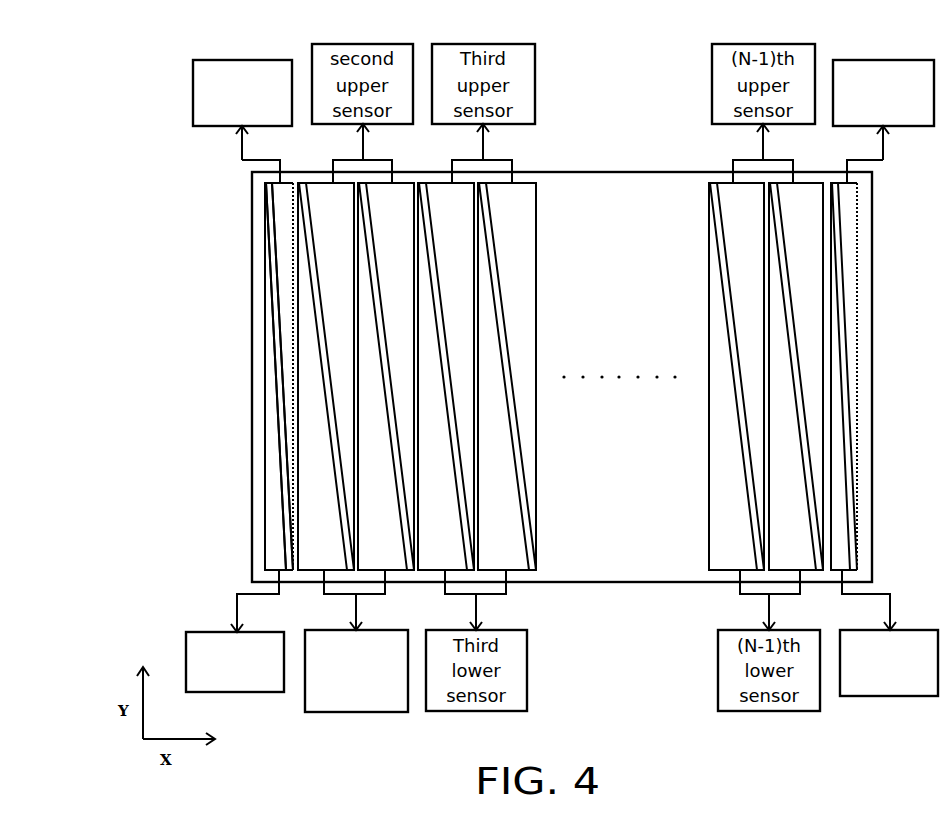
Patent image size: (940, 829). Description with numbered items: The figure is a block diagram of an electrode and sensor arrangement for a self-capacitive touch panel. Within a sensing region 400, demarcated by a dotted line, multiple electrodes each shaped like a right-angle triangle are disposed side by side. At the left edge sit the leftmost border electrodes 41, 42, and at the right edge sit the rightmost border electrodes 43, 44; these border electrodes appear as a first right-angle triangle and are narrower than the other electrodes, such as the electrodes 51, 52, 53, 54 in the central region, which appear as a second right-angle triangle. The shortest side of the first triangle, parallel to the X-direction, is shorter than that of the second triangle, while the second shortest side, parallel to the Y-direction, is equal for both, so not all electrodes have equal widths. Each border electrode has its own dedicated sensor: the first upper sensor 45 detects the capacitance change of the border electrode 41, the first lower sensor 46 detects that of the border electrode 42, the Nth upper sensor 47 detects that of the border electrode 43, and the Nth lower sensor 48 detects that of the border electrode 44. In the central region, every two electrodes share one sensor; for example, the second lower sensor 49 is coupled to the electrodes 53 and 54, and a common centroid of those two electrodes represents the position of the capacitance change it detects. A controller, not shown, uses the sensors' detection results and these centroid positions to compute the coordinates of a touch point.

The sensing region 400 is at (872, 386).
The border electrode 41 is at (287, 186).
The border electrode 42 is at (271, 451).
The border electrode 43 is at (853, 252).
The border electrode 44 is at (836, 566).
The electrode 51 is at (319, 188).
The electrode 52 is at (402, 188).
The electrode 53 is at (315, 567).
The electrode 54 is at (401, 567).
The first upper sensor 45 is at (250, 60).
The Nth upper sensor 47 is at (916, 60).
The first lower sensor 46 is at (191, 632).
The second lower sensor 49 is at (360, 712).
The Nth lower sensor 48 is at (888, 697).